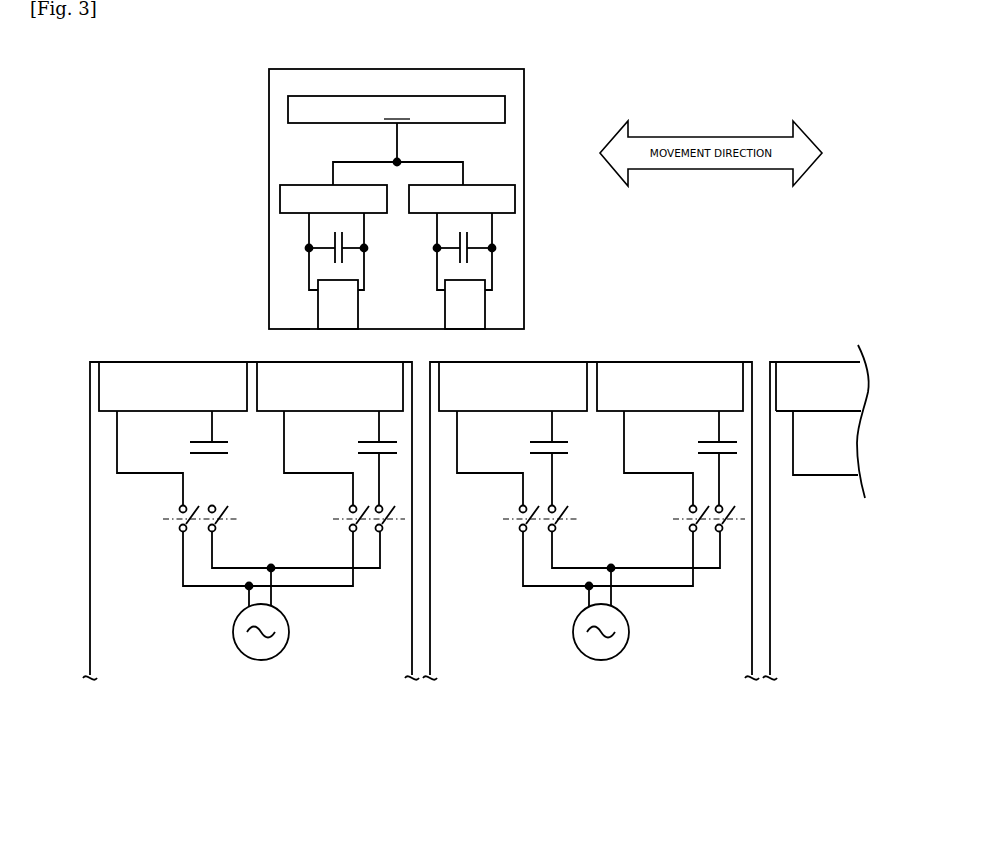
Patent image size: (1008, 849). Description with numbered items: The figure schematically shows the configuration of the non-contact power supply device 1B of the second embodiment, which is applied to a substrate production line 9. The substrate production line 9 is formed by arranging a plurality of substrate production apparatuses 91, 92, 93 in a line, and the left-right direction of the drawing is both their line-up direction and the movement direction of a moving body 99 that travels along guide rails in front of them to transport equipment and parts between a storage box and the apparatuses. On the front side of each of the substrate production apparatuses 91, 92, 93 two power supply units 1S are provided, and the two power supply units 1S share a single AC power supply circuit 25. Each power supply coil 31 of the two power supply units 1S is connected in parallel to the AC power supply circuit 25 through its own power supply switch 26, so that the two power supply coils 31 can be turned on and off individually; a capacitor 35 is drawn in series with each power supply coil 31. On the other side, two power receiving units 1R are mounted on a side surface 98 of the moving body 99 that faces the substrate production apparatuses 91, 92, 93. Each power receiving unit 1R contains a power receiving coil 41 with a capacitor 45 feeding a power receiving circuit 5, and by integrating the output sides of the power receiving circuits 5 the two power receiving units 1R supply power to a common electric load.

The moving body 99 is at (285, 83).
The power receiving circuit 5 is at (326, 212).
The capacitor 45 is at (336, 234).
The receiving coil 41 is at (325, 318).
The power receiving unit 1R is at (277, 296).
The side surface 98 is at (306, 329).
The non-contact power supply device 1B is at (139, 313).
The power supply coil 31 is at (159, 398).
The capacitor 35 is at (228, 445).
The power supply switch 26 is at (165, 519).
The AC power supply circuit 25 is at (289, 630).
The substrate production apparatus 91 is at (130, 629).
The substrate production apparatus 92 is at (470, 629).
The substrate production apparatus 93 is at (806, 627).
The power supply unit 1S is at (165, 624).
The substrate production line 9 is at (857, 677).